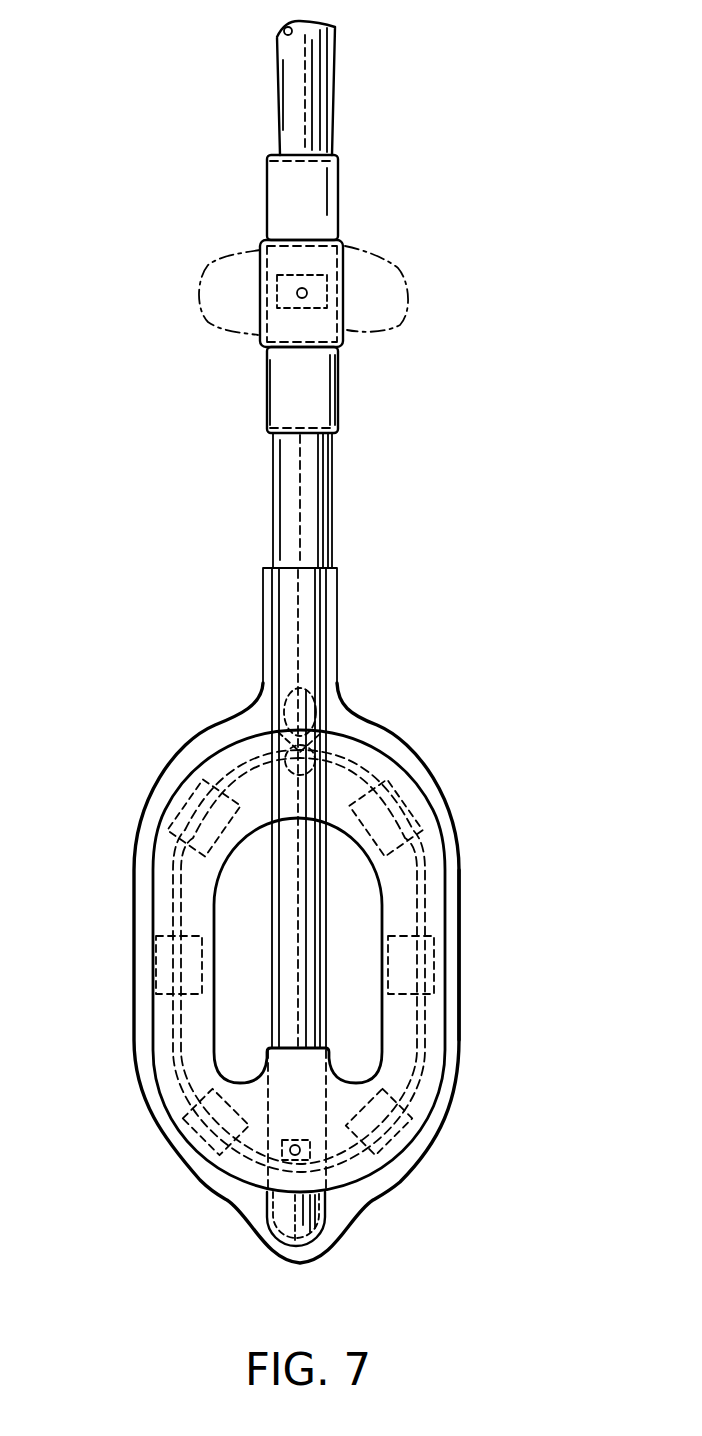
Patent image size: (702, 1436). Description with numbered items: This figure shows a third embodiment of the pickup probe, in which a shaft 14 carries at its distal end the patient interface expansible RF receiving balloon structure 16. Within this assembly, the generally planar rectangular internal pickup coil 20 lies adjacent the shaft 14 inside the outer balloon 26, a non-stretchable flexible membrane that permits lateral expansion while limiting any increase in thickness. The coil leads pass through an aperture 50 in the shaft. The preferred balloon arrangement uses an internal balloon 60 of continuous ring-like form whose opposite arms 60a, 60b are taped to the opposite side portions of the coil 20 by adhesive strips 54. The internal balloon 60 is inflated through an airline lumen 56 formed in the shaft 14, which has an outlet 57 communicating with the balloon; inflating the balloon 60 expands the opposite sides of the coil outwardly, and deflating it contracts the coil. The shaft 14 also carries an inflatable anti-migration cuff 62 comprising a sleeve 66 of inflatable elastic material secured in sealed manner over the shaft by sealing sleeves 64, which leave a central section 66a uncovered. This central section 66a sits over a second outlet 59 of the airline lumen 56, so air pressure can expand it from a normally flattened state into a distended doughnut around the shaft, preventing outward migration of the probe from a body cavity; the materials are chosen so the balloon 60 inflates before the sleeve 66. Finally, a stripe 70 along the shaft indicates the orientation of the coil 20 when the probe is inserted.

The shaft 14 is at (266, 466).
The patient interface expansible RF receiving balloon structure 16 is at (480, 1049).
The internal pickup coil 20 is at (170, 1028).
The outer balloon 26 is at (469, 832).
The aperture 50 is at (313, 708).
The adhesive gauze strips 54 is at (172, 797).
The airline lumen 56 is at (283, 28).
The outlet 57 is at (318, 1178).
The second outlet 59 is at (330, 308).
The internal balloon 60 is at (144, 852).
The arm of internal balloon 60a is at (188, 923).
The arm of internal balloon 60b is at (430, 913).
The inflatable anti-migration cuff 62 is at (248, 232).
The sealing sleeves 64 is at (313, 188).
The sleeve 66 is at (250, 352).
The central section 66a is at (197, 298).
The stripe 70 is at (313, 93).